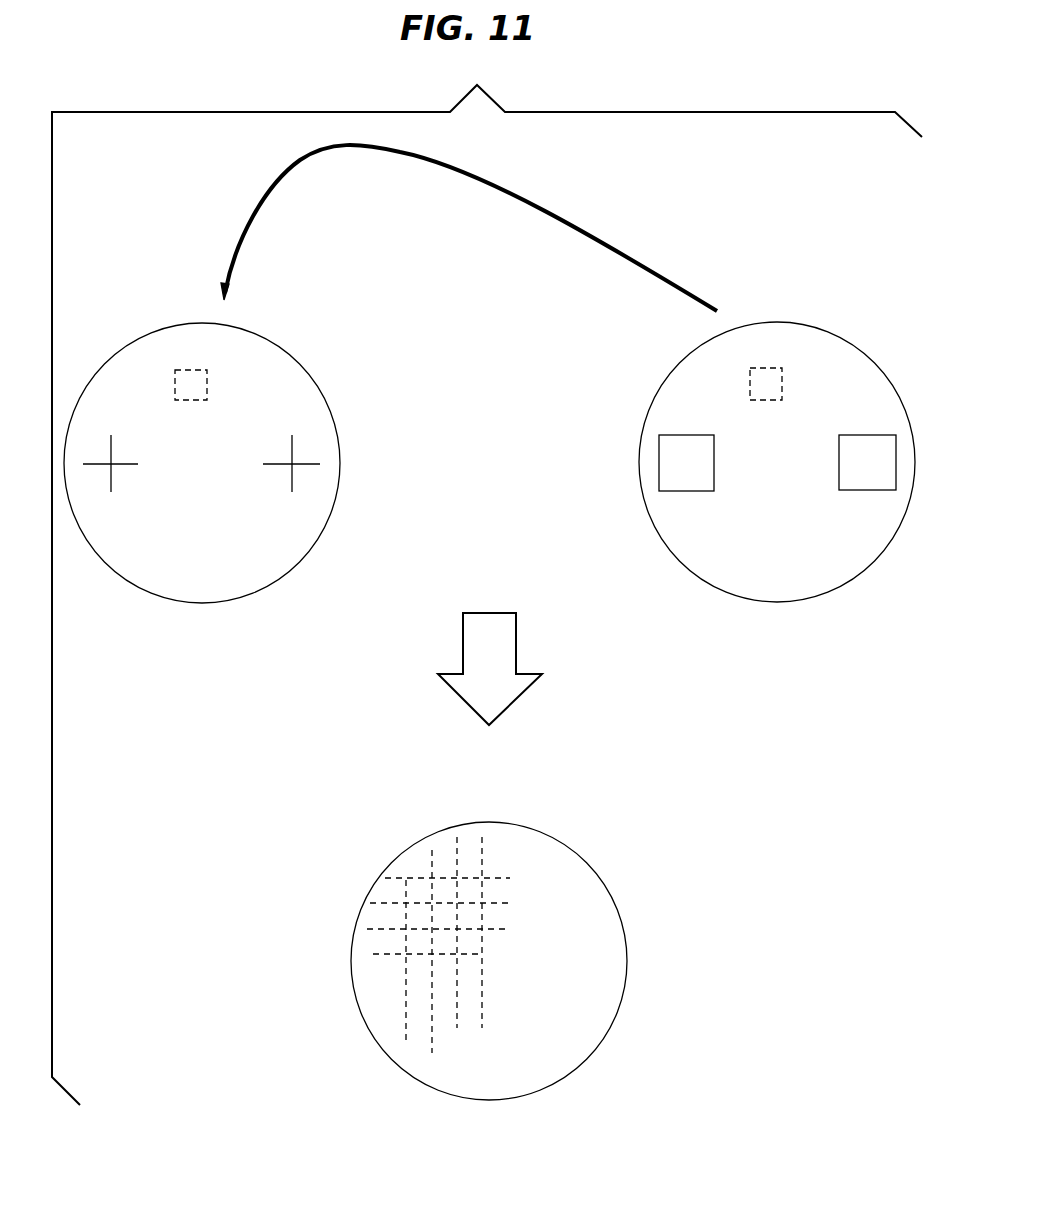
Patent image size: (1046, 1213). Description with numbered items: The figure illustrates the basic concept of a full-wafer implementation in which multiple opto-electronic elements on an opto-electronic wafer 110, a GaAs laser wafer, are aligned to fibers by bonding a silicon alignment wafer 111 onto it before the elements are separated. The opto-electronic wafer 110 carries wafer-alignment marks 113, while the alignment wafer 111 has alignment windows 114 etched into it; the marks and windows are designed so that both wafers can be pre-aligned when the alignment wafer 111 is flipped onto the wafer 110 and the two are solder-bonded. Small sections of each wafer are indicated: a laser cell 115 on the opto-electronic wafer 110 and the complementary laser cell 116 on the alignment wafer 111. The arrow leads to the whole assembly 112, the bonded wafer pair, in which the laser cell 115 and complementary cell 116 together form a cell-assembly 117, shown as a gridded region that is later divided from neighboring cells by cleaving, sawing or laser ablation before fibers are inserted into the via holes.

The opto-electronic wafer 110 is at (131, 302).
The alignment wafer 111 is at (869, 304).
The whole assembly 112 is at (691, 911).
The wafer-alignment marks 113 is at (308, 466).
The alignment windows 114 is at (659, 462).
The laser cell 115 is at (207, 380).
The complementary laser cell 116 is at (762, 368).
The cell-assembly 117 is at (470, 892).